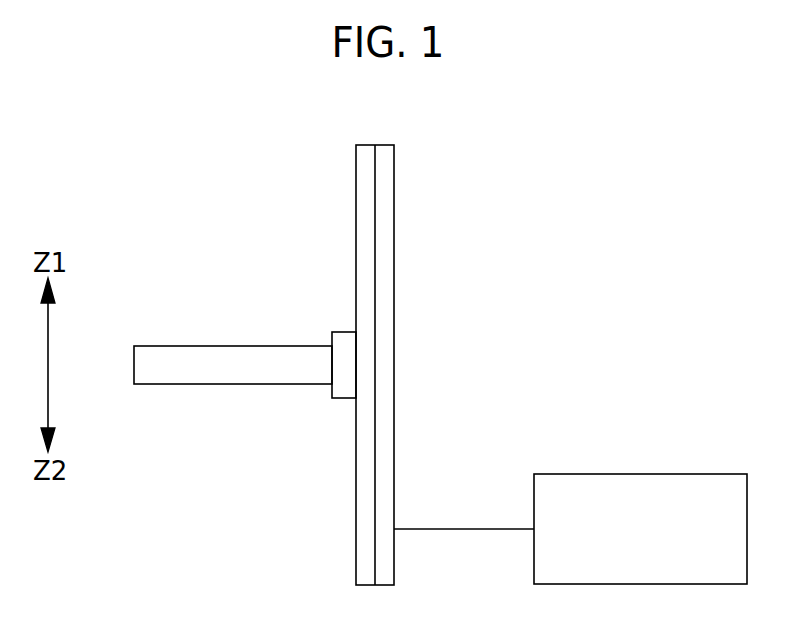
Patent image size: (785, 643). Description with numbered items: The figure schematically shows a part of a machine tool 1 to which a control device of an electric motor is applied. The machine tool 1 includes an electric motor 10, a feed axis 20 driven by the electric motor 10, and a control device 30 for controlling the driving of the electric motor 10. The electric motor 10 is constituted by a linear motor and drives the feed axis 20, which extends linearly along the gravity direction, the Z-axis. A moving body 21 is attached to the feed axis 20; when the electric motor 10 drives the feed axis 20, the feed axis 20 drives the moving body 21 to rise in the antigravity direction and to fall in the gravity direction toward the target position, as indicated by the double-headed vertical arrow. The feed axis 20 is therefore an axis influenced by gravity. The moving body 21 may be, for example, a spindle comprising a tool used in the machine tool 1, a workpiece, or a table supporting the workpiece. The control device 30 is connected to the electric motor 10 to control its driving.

The machine tool 1 is at (586, 234).
The electric motor 10 is at (394, 240).
The feed axis 20 is at (356, 222).
The moving body 21 is at (233, 384).
The control device 30 is at (642, 474).